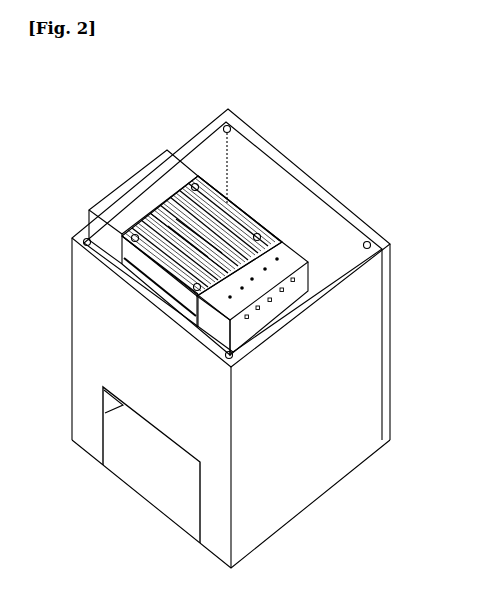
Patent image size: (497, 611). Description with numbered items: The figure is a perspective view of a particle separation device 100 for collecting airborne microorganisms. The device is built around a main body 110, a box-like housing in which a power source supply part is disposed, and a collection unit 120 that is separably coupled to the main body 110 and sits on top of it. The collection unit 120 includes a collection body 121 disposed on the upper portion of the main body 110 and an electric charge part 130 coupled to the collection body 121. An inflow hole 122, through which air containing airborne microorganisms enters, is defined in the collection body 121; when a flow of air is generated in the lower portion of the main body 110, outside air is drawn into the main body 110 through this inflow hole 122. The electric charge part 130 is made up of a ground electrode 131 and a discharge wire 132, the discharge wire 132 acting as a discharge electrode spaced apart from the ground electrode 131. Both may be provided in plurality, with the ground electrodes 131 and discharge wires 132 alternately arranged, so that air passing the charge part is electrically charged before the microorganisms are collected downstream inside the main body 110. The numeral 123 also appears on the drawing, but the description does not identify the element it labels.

The particle separation device 100 is at (156, 110).
The main body 110 is at (378, 332).
The collection unit 120 is at (117, 168).
The collection body 121 is at (107, 196).
The inflow hole 122 is at (197, 196).
The fin stack 123 is at (213, 245).
The electric charge part 130 is at (156, 251).
The ground electrode 131 is at (207, 188).
The discharge wire 132 is at (208, 212).